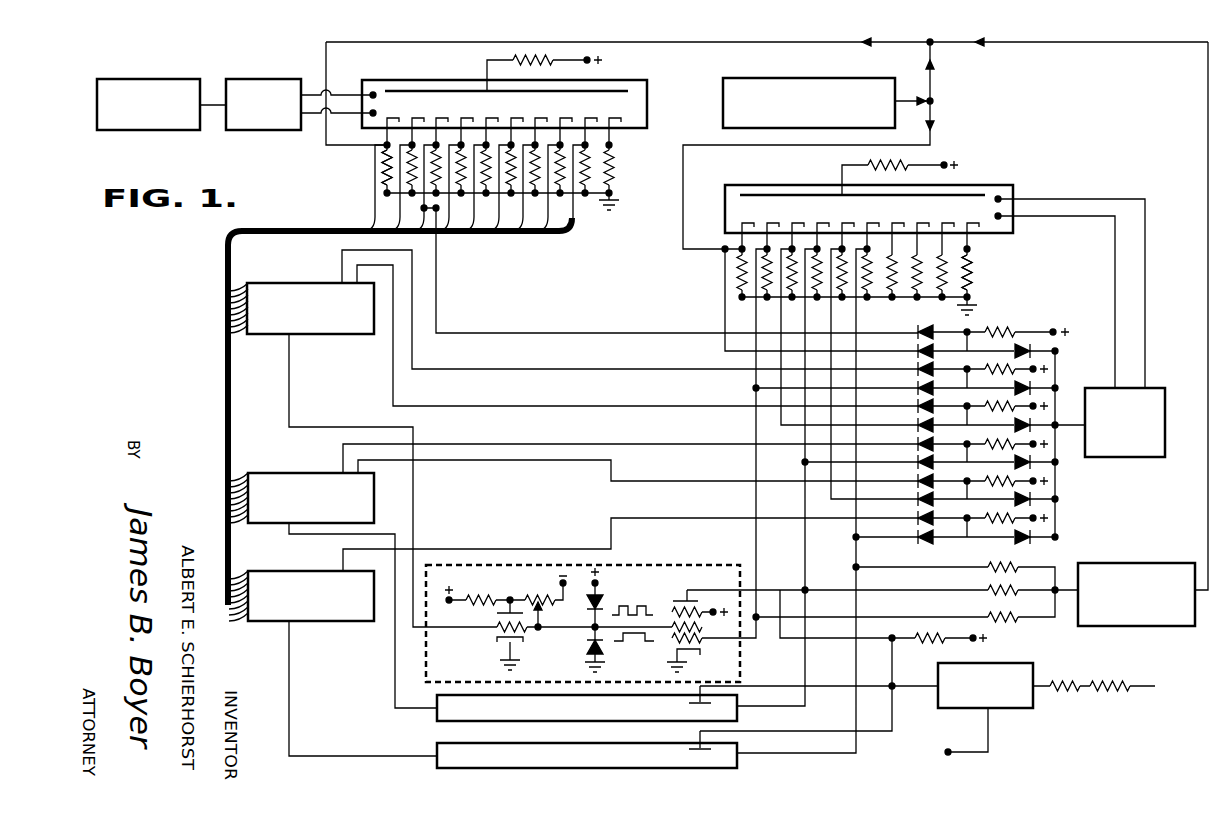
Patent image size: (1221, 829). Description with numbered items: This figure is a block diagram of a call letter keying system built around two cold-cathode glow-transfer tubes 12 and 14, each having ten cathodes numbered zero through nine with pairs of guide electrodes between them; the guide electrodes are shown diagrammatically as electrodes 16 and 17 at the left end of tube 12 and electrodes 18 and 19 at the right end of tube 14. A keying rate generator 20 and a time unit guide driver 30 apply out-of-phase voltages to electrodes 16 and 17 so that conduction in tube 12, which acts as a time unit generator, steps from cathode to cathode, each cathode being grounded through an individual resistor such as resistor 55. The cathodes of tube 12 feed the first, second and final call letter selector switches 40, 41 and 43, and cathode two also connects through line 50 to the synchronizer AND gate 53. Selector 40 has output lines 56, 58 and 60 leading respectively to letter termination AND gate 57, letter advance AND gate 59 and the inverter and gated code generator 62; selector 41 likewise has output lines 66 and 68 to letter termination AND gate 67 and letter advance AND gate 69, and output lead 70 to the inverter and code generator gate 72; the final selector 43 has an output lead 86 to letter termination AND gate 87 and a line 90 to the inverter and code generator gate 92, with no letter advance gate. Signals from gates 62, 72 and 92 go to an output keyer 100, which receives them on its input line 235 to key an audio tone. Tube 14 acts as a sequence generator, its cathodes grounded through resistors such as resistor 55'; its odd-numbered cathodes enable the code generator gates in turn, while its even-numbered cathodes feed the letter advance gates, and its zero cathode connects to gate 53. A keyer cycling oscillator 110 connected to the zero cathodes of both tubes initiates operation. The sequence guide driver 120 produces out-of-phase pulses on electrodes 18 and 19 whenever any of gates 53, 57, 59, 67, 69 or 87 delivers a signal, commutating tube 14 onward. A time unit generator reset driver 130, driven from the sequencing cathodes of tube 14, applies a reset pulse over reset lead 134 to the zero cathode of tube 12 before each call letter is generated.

The keying rate generator 20 is at (118, 80).
The time unit guide driver 30 is at (238, 80).
The guide electrode 16 is at (372, 94).
The guide electrode 17 is at (372, 113).
The cold-cathode glow-transfer tube 12 is at (647, 103).
The resistor 55 is at (367, 167).
The keyer cycling oscillator 110 is at (825, 80).
The cold-cathode glow-transfer tube 14 is at (967, 185).
The guide electrode 18 is at (1000, 198).
The guide electrode 19 is at (1000, 217).
The resistor 55' is at (983, 272).
The reset lead 134 is at (1206, 182).
The first call letter selector switch 40 is at (312, 277).
The second call letter selector switch 41 is at (312, 467).
The final call letter selector switch 43 is at (312, 564).
The line 50 is at (474, 333).
The output line 56 is at (467, 369).
The output line 58 is at (460, 406).
The output line 60 is at (377, 425).
The output line 66 is at (498, 443).
The output line 68 is at (492, 460).
The output lead 70 is at (376, 532).
The output lead 86 is at (476, 549).
The line 90 is at (289, 646).
The inverter and gated code generator 62 is at (583, 623).
The inverter and code generator gate 72 is at (587, 708).
The inverter and code generator gate 92 is at (587, 755).
The synchronizer AND gate 53 is at (993, 341).
The letter termination AND gate 57 is at (988, 378).
The letter advance AND gate 59 is at (988, 415).
The letter termination AND gate 67 is at (988, 453).
The letter advance AND gate 69 is at (988, 490).
The letter termination AND gate 87 is at (988, 527).
The sequence guide driver 120 is at (1155, 388).
The time unit generator reset driver 130 is at (1123, 563).
The output keyer 100 is at (984, 663).
The input line 235 is at (931, 684).